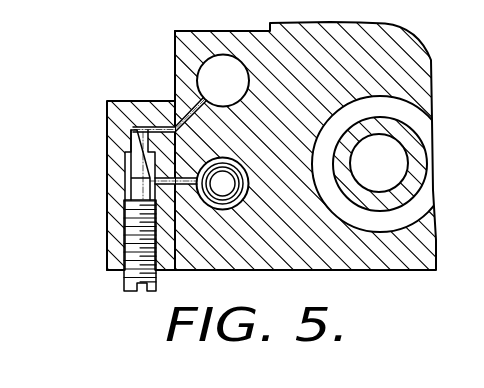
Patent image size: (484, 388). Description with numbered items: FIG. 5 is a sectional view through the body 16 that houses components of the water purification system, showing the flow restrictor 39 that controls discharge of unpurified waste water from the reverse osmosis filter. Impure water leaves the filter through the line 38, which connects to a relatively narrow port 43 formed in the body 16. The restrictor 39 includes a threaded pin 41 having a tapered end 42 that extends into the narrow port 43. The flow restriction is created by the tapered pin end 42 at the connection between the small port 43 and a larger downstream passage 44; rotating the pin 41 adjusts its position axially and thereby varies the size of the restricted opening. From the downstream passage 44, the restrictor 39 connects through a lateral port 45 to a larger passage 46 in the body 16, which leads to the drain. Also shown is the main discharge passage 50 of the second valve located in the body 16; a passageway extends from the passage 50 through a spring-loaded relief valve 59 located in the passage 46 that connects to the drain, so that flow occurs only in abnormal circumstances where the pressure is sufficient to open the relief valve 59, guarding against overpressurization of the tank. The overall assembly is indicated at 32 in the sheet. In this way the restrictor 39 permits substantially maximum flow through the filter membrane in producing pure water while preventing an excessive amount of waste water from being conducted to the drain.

The body 16 is at (425, 64).
The valve assembly 32 is at (373, 17).
The line 38 is at (201, 72).
The flow restrictor 39 is at (101, 143).
The threaded pin 41 is at (128, 232).
The tapered end 42 is at (140, 160).
The narrow port 43 is at (133, 128).
The downstream passage 44 is at (131, 187).
The lateral port 45 is at (176, 196).
The larger passage 46 is at (243, 163).
The main discharge passage 50 is at (398, 165).
The spring-loaded relief valve 59 is at (221, 180).